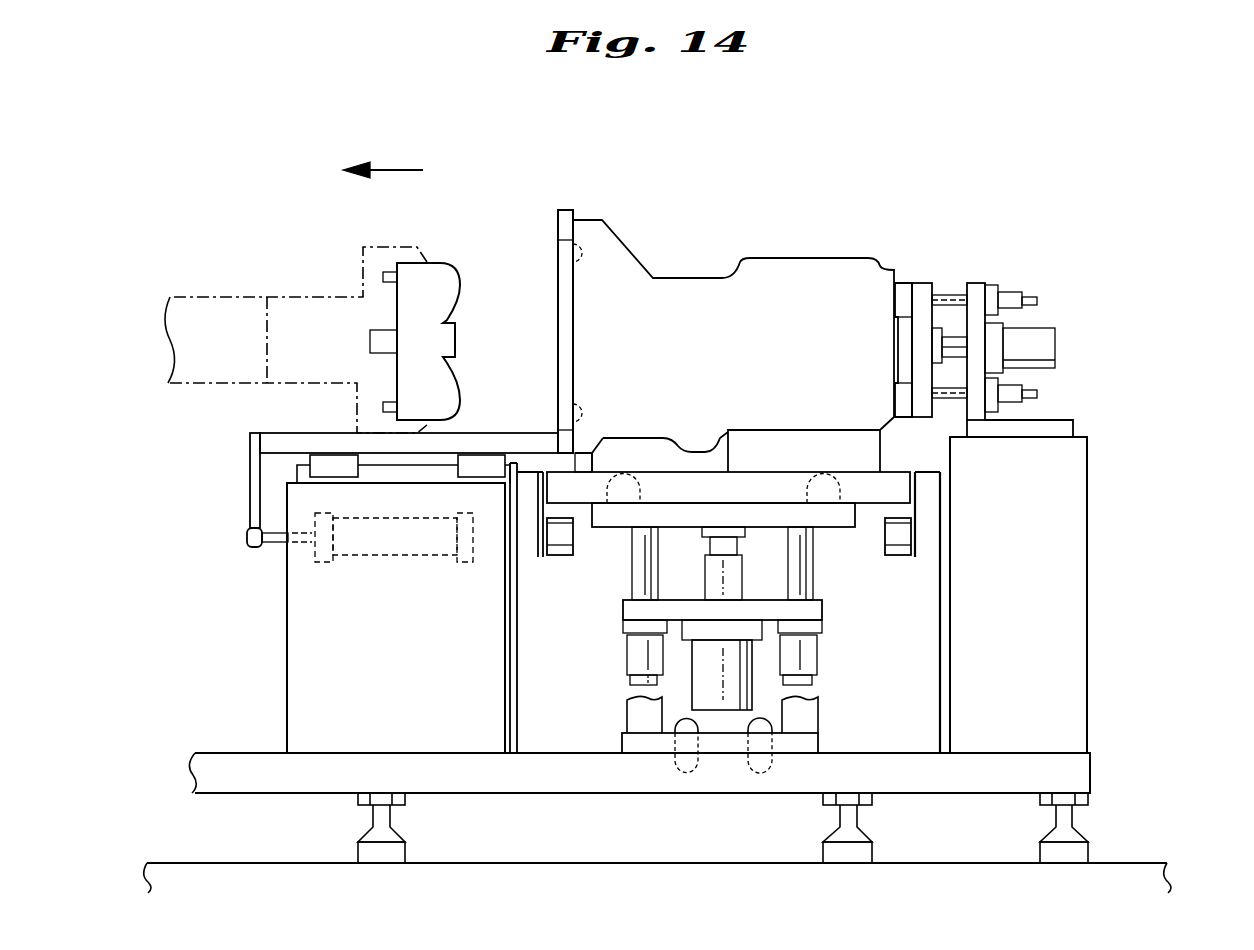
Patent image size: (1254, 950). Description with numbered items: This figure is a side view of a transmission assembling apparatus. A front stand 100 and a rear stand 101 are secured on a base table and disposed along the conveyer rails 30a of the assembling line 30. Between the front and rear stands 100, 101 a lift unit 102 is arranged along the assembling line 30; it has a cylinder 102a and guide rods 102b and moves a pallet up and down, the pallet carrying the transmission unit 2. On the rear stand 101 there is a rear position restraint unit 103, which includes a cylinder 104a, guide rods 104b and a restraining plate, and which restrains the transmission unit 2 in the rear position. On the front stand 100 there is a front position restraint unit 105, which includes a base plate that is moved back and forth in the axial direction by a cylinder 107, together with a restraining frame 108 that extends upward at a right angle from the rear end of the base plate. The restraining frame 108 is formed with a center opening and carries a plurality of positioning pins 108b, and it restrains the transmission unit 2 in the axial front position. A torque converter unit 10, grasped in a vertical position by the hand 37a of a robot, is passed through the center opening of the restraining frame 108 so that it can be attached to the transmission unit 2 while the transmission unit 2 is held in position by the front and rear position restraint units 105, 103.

The transmission unit 2 is at (806, 256).
The torque converter unit 10 is at (443, 262).
The assembling line 30 is at (725, 608).
The conveyer rails 30a is at (575, 545).
The hand 37a is at (360, 265).
The front stand 100 is at (305, 643).
The rear stand 101 is at (1078, 583).
The lift unit 102 is at (737, 740).
The cylinder 102a is at (728, 700).
The guide rods 102b is at (626, 652).
The rear position restraint unit 103 is at (905, 285).
The cylinder 104a is at (1055, 350).
The guide rods 104b is at (947, 293).
The front position restraint unit 105 is at (240, 490).
The cylinder 107 is at (417, 555).
The restraining frame 108 is at (557, 252).
The positioning pins 108b is at (600, 242).